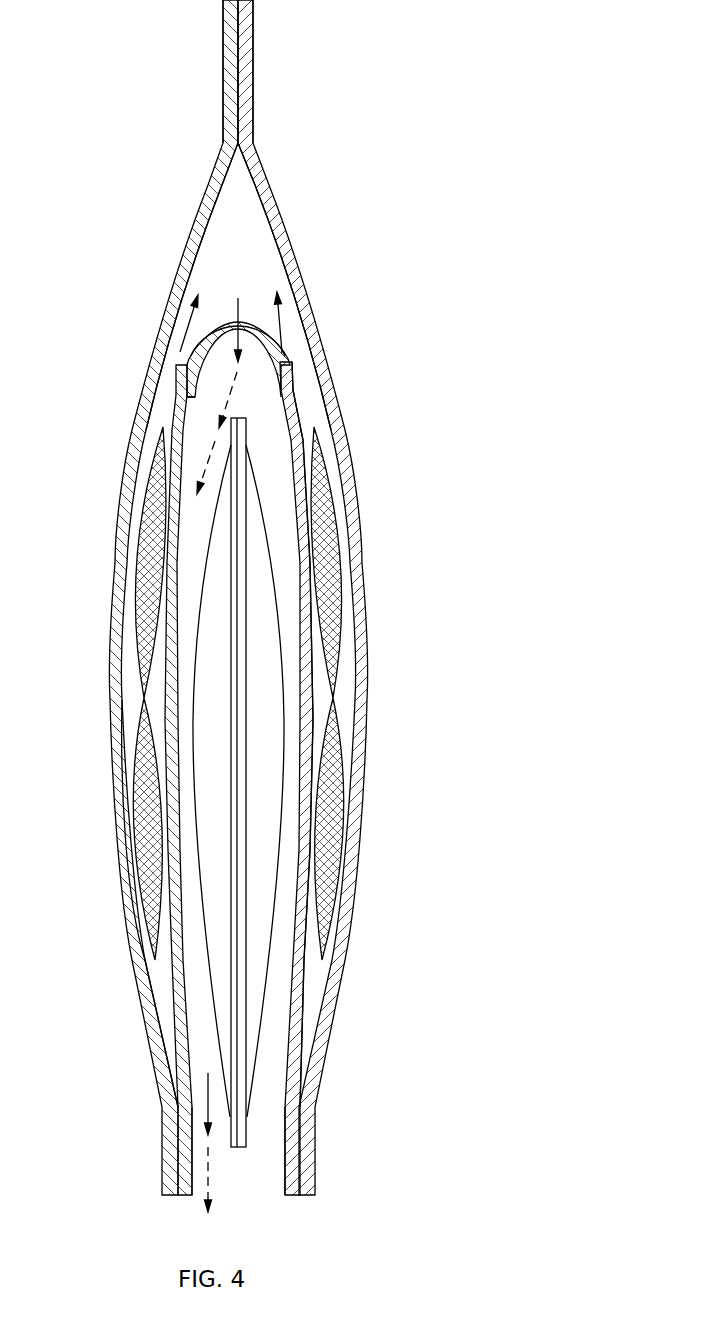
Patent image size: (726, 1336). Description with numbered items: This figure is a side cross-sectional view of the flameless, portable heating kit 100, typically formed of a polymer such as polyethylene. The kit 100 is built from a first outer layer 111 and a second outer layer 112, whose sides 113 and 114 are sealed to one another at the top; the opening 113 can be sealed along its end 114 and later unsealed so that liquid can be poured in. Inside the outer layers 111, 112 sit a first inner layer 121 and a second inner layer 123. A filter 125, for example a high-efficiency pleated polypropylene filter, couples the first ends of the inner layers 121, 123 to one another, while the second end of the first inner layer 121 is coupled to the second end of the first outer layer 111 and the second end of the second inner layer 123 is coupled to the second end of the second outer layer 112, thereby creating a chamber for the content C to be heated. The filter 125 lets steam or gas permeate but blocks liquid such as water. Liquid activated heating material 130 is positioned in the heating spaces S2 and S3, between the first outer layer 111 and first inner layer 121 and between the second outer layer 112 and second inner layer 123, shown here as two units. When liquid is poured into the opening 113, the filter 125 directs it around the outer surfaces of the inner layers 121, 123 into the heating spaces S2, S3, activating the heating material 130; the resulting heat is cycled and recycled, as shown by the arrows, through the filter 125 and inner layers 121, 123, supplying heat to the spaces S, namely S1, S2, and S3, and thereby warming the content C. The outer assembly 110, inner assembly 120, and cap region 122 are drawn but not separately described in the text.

The kit 100 is at (456, 137).
The outer sheath assembly 110 is at (125, 210).
The first outer layer 111 is at (180, 287).
The second outer layer 112 is at (266, 198).
The opening 113 is at (250, 118).
The end 114 is at (242, 47).
The inner body assembly 120 is at (385, 295).
The first inner layer 121 is at (185, 407).
The cap layer 122 is at (272, 343).
The second inner layer 123 is at (298, 421).
The filter 125 is at (273, 358).
The liquid activated heating material 130 is at (143, 638).
The content C is at (267, 772).
The spaces S is at (82, 958).
The heating space S1 is at (200, 1078).
The heating space S2 is at (157, 973).
The heating space S3 is at (313, 992).